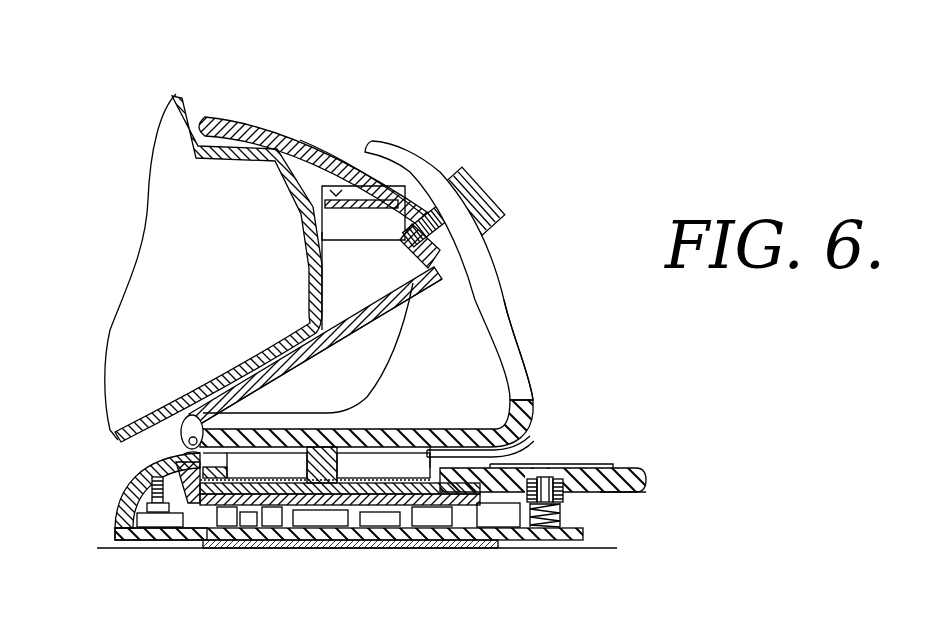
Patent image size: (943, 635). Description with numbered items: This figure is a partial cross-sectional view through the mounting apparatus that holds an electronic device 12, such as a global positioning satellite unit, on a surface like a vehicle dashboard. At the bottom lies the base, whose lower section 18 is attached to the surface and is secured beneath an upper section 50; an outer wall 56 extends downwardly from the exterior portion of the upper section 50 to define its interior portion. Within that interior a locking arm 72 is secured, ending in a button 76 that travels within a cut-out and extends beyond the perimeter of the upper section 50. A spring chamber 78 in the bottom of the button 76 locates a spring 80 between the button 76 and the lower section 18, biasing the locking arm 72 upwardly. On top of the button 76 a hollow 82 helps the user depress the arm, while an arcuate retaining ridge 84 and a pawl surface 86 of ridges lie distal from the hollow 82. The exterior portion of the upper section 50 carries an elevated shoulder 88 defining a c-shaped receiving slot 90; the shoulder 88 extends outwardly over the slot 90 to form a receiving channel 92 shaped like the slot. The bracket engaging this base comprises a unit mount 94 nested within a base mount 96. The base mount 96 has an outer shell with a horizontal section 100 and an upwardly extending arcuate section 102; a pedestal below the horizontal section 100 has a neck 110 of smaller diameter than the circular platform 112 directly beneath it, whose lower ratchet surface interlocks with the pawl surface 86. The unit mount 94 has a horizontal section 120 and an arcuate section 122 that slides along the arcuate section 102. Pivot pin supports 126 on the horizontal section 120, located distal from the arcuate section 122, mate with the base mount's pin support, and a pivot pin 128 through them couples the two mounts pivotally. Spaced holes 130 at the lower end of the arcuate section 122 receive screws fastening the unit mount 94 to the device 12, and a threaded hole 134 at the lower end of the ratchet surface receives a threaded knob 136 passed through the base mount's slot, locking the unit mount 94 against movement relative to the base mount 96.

The electronic device 12 is at (178, 92).
The lower section 18 is at (578, 531).
The upper section 50 is at (128, 487).
The outer wall 56 is at (123, 522).
The locking arm 72 is at (647, 486).
The button 76 is at (642, 492).
The spring chamber 78 is at (556, 477).
The spring 80 is at (534, 528).
The hollow 82 is at (612, 467).
The arcuate retaining ridge 84 is at (436, 497).
The pawl surface 86 is at (424, 497).
The elevated shoulder 88 is at (203, 457).
The receiving slot 90 is at (232, 484).
The receiving channel 92 is at (216, 484).
The unit mount 94 is at (253, 122).
The base mount 96 is at (533, 358).
The horizontal section 100 is at (455, 428).
The arcuate section 102 is at (492, 268).
The neck 110 is at (513, 437).
The circular platform 112 is at (408, 486).
The horizontal section 120 is at (292, 364).
The arcuate section 122 is at (303, 134).
The pivot pin supports 126 is at (115, 435).
The pivot pin 128 is at (190, 414).
The spaced holes 130 is at (337, 190).
The threaded hole 134 is at (430, 268).
The threaded knob 136 is at (487, 166).